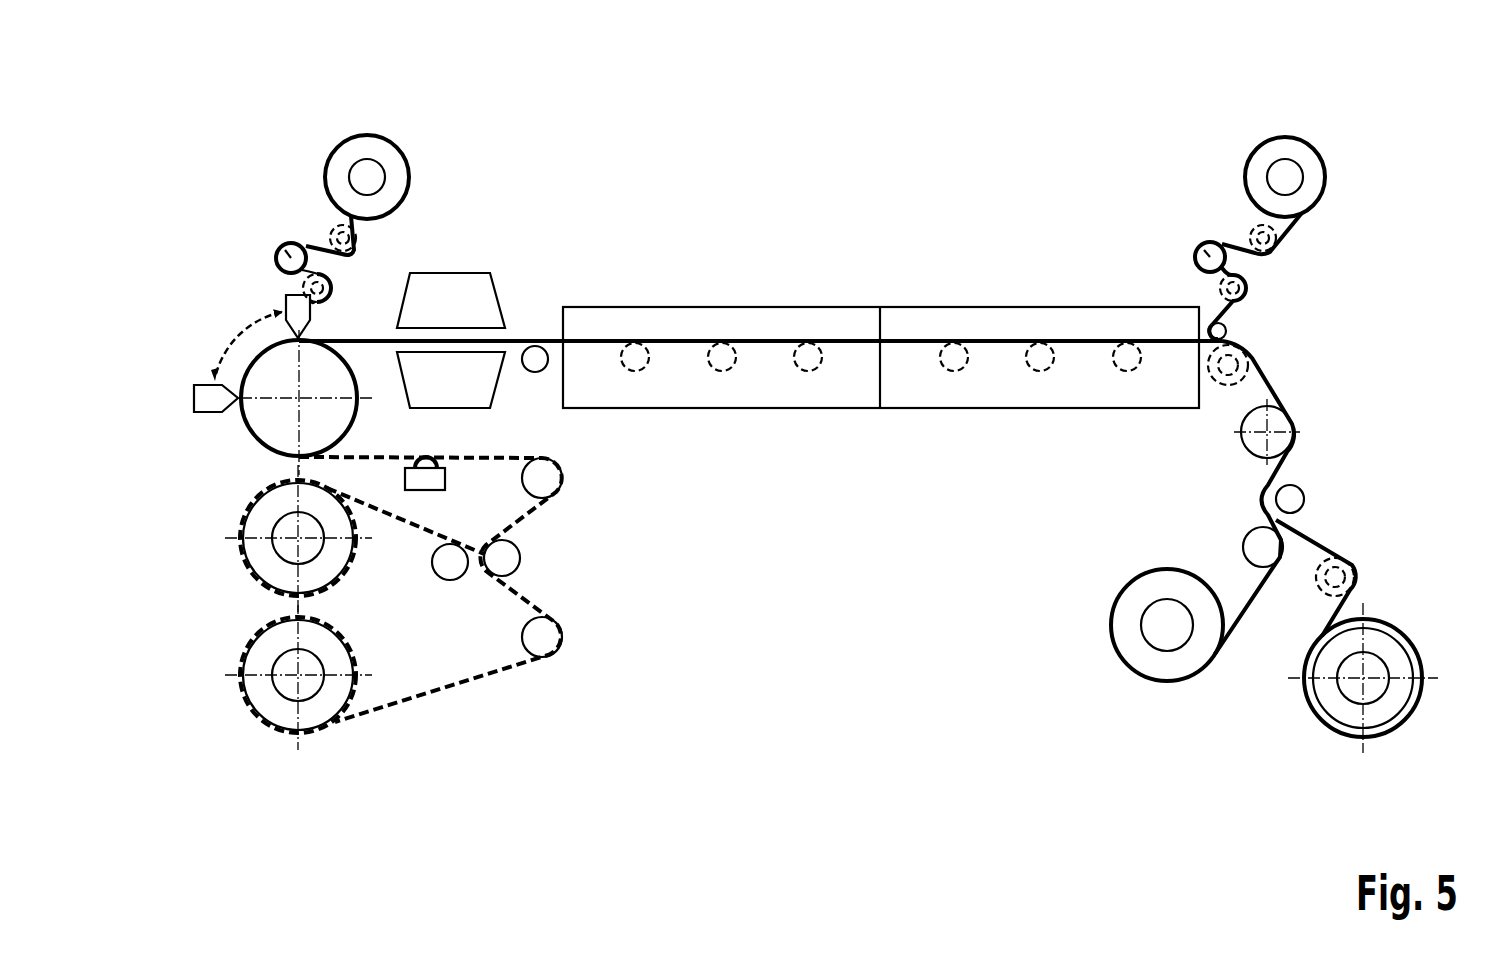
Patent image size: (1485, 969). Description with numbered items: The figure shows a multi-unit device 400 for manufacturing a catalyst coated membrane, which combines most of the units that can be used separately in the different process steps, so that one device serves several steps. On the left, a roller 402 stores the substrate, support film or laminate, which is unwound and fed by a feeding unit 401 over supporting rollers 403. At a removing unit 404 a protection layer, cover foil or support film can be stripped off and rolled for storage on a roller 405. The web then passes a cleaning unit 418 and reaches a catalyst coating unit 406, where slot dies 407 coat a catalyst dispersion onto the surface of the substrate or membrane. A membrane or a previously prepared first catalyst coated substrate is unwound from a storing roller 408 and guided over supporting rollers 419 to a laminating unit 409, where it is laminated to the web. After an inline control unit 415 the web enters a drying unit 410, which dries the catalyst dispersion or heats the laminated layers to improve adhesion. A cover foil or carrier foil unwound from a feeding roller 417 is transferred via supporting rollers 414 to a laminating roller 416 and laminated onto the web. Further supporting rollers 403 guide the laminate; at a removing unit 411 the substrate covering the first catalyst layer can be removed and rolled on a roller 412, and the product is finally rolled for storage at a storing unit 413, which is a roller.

The multi-unit device 400 is at (835, 175).
The feeding unit 401 is at (455, 707).
The roller 402 is at (265, 703).
The supporting rollers 403 is at (565, 479).
The removing unit 404 is at (437, 576).
The roller 405 is at (265, 566).
The catalyst coating unit 406 is at (188, 292).
The slot dies 407 is at (270, 295).
The storing roller 408 is at (325, 132).
The laminating unit 409 is at (350, 282).
The drying unit 410 is at (877, 300).
The removing unit 411 is at (1243, 497).
The roller 412 is at (1108, 657).
The storing unit 413 is at (1325, 735).
The supporting rollers 414 is at (1220, 288).
The inline control unit 415 is at (490, 292).
The laminating roller 416 is at (1226, 330).
The feeding roller 417 is at (1247, 132).
The cleaning unit 418 is at (420, 478).
The supporting rollers 419 is at (330, 238).